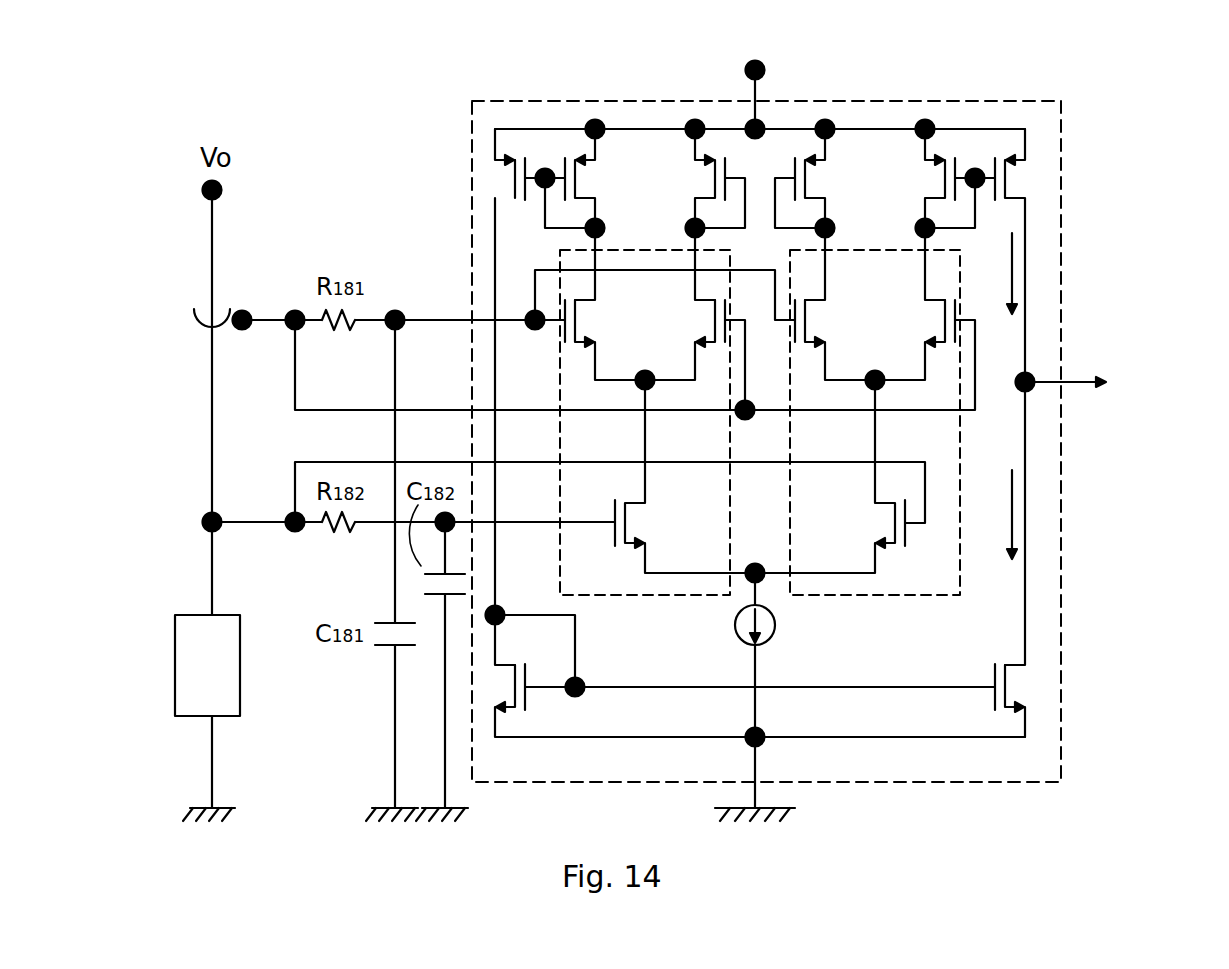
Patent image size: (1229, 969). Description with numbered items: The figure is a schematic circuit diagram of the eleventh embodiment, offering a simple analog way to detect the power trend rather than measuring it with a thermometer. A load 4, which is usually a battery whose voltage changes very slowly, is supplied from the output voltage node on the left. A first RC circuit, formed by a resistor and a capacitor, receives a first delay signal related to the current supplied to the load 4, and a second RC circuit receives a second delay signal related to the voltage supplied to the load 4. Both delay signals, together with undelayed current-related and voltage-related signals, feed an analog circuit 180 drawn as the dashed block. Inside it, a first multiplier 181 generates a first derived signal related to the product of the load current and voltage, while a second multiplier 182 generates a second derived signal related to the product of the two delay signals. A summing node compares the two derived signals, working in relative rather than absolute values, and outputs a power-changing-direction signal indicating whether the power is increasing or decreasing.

The load 4 is at (240, 672).
The analog circuit 180 is at (741, 420).
The first multiplier 181 is at (950, 585).
The second multiplier 182 is at (608, 585).